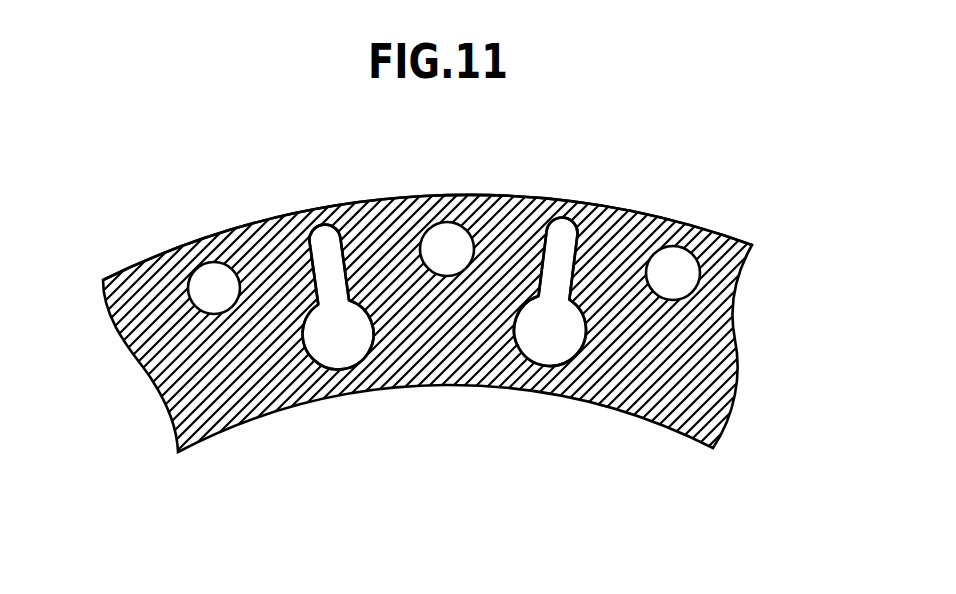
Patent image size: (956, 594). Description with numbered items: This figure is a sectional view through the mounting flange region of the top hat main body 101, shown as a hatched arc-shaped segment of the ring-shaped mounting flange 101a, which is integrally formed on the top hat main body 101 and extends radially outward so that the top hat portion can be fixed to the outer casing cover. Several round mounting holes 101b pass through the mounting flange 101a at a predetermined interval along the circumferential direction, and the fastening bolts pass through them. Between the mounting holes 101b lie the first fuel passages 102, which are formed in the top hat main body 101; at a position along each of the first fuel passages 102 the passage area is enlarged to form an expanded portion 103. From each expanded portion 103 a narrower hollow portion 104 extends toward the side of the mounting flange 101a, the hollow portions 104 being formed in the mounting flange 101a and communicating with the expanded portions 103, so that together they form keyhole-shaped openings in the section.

The top hat main body 101 is at (547, 195).
The mounting flange 101a is at (353, 223).
The mounting holes 101b is at (200, 273).
The first fuel passages 102 is at (342, 367).
The expanded portions 103 is at (358, 348).
The hollow portions 104 is at (318, 248).